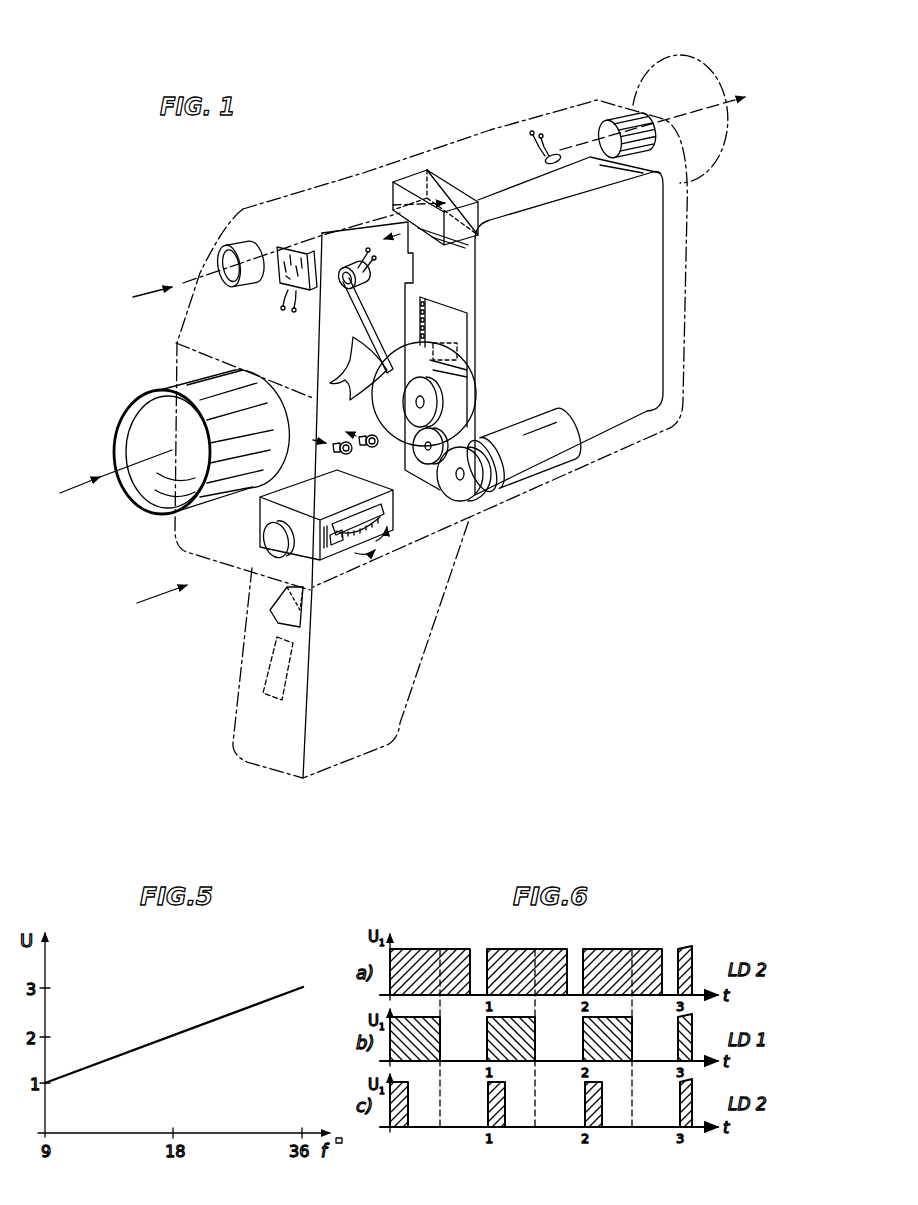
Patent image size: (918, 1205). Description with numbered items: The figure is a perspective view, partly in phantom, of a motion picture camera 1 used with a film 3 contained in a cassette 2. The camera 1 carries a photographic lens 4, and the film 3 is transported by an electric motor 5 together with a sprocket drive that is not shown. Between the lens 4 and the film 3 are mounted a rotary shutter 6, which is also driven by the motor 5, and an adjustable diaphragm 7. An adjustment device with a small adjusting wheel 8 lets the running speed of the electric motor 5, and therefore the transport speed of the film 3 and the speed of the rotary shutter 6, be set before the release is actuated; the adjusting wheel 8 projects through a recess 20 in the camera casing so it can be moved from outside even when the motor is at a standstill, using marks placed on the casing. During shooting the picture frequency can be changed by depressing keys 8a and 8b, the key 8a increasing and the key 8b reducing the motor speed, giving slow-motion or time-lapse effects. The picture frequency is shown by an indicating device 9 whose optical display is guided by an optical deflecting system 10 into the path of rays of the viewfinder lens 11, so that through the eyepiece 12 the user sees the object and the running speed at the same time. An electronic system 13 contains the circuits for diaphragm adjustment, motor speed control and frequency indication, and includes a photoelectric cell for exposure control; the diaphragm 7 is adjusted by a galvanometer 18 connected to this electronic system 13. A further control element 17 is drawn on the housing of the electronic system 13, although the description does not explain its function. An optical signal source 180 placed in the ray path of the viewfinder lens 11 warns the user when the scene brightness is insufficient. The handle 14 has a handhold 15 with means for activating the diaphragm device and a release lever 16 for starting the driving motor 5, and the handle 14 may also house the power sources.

The motion picture camera 1 is at (688, 308).
The cassette 2 is at (628, 390).
The film 3 is at (453, 315).
The photographic lens 4 is at (138, 438).
The electric motor 5 is at (530, 462).
The rotary shutter 6 is at (447, 373).
The adjustable diaphragm 7 is at (353, 370).
The adjusting wheel 8 is at (376, 525).
The key 8a is at (333, 450).
The key 8b is at (370, 448).
The indicating device 9 is at (293, 247).
The optical deflecting system 10 is at (413, 180).
The viewfinder lens 11 is at (227, 258).
The eyepiece 12 is at (628, 117).
The electronic system 13 is at (397, 508).
The handle 14 is at (407, 657).
The handhold 15 is at (277, 667).
The release lever 16 is at (282, 618).
The knob 17 is at (266, 540).
The galvanometer 18 is at (367, 280).
The recess 20 is at (331, 538).
The optical signal source 180 is at (546, 152).